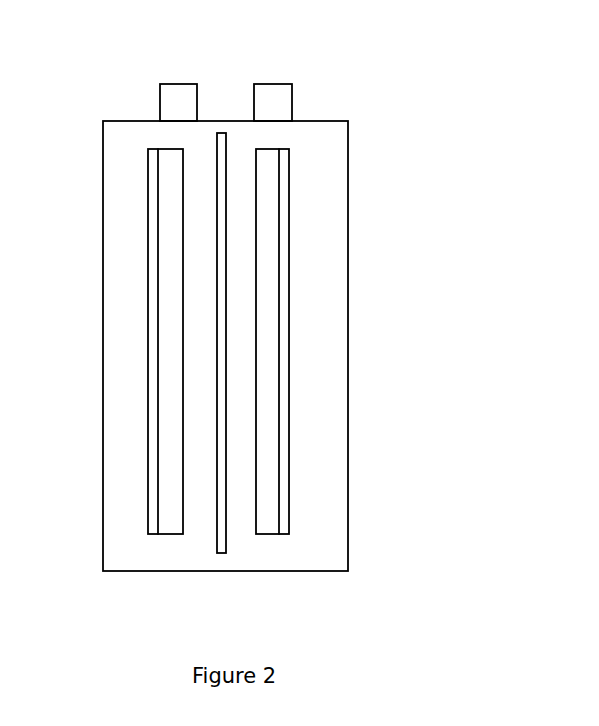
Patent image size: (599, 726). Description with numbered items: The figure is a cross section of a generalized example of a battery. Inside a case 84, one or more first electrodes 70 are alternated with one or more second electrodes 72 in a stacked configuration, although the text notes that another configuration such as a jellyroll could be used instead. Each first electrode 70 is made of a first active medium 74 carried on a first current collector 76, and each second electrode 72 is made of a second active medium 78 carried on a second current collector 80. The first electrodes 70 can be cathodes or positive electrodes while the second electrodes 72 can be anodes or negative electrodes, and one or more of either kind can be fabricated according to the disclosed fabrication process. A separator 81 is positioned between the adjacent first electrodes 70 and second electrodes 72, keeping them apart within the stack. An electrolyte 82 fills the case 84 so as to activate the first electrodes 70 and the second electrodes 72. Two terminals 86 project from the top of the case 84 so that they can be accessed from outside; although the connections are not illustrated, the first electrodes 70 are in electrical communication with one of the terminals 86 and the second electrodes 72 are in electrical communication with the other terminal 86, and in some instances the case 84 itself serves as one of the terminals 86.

The first electrode 70 is at (169, 552).
The second electrode 72 is at (277, 549).
The first active medium 74 is at (165, 441).
The first current collector 76 is at (150, 272).
The second active medium 78 is at (272, 196).
The second current collector 80 is at (290, 252).
The separator 81 is at (221, 543).
The electrolyte 82 is at (328, 421).
The case 84 is at (103, 196).
The terminals 86 is at (178, 102).